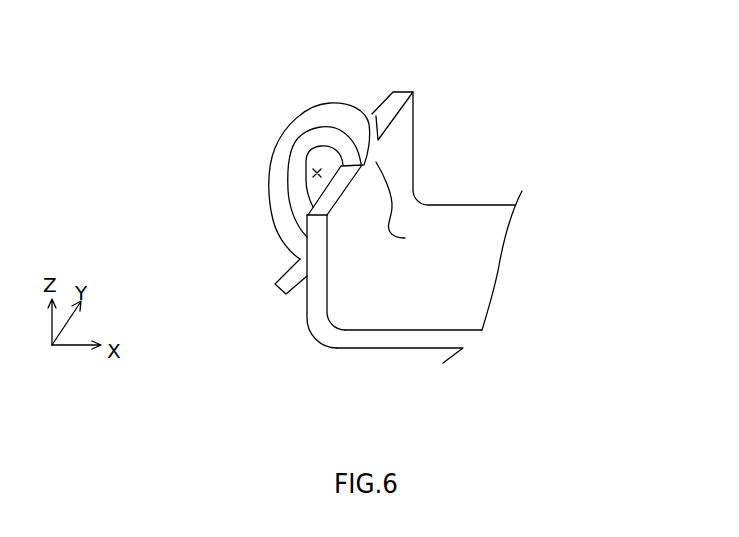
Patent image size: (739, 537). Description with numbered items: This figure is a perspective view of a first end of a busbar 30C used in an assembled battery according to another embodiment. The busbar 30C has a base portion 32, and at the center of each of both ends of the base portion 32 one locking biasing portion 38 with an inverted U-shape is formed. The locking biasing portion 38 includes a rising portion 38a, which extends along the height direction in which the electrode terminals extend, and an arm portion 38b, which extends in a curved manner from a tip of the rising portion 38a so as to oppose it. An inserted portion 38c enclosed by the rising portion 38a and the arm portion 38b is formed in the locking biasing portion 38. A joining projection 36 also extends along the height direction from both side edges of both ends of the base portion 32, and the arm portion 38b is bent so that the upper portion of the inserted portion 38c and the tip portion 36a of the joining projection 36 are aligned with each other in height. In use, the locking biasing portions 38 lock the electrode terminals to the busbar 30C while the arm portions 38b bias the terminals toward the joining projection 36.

The busbar 30C is at (167, 43).
The locking biasing portion 38 is at (330, 93).
The rising portion 38a is at (345, 318).
The arm portion 38b is at (277, 172).
The inserted portion 38c is at (313, 178).
The joining projection 36 is at (306, 297).
The tip portion 36a is at (397, 92).
The base portion 32 is at (404, 340).